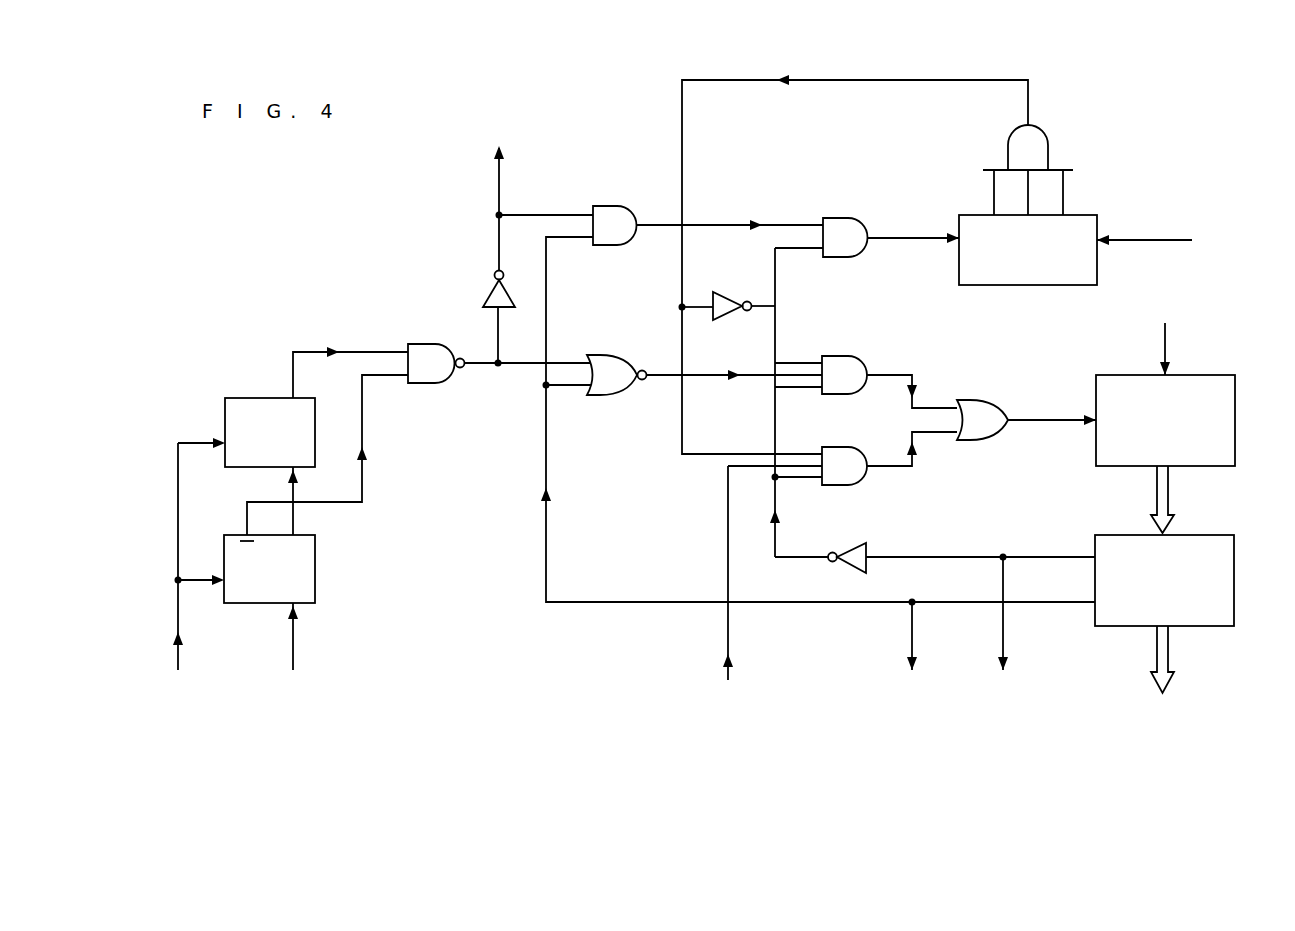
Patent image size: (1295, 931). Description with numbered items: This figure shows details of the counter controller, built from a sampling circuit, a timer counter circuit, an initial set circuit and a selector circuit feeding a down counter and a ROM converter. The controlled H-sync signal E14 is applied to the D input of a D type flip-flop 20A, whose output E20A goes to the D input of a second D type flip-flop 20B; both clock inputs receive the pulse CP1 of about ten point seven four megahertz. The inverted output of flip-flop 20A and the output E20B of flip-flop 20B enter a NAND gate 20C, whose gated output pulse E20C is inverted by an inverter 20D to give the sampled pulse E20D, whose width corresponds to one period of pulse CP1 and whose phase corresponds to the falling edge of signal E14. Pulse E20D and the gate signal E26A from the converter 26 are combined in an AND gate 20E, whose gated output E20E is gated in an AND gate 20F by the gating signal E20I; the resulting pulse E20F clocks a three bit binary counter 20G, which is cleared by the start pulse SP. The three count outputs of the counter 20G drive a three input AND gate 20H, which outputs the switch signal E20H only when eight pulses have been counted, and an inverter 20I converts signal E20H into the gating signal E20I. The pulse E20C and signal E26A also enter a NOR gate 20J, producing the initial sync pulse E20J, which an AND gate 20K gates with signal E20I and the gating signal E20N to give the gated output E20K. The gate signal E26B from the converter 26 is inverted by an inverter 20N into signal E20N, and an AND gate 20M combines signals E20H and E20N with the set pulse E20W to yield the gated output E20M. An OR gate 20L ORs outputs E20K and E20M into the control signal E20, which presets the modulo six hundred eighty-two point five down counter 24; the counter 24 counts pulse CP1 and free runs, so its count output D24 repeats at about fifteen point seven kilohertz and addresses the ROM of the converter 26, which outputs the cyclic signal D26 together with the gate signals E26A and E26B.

The D type flip-flop 20A is at (315, 578).
The D type flip-flop 20B is at (245, 398).
The NAND gate 20C is at (432, 383).
The inverter 20D is at (482, 296).
The AND gate 20E is at (614, 206).
The AND gate 20F is at (855, 218).
The 3-bit binary counter 20G is at (1010, 285).
The 3-input AND gate 20H is at (1048, 140).
The inverter 20I is at (735, 292).
The NOR gate 20J is at (630, 395).
The AND gate 20K is at (850, 356).
The OR gate 20L is at (990, 400).
The AND gate 20M is at (850, 447).
The inverter 20N is at (846, 544).
The counter 24 is at (1235, 428).
The converter 26 is at (1234, 607).
The output of FF 20A E20A is at (293, 517).
The output of FF 20B E20B is at (332, 352).
The gated output pulse E20C is at (490, 366).
The sampled pulse E20D is at (534, 192).
The gated output E20E is at (735, 225).
The gated output pulse E20F is at (900, 250).
The switch signal E20H is at (790, 80).
The gating signal E20I is at (775, 306).
The initial sync pulse E20J is at (723, 378).
The gated output E20K is at (915, 380).
The gated output E20M is at (915, 462).
The gating signal E20N is at (772, 530).
The set pulse E20W is at (758, 599).
The control signal E20 is at (1040, 420).
The gate signal E26A is at (548, 505).
The gate signal E26B is at (980, 631).
The controlled H-sync signal E14 is at (293, 650).
The pulse CP1 is at (189, 570).
The start pulse SP is at (1159, 230).
The count output D24 is at (1168, 510).
The cyclic signal D26 is at (1168, 670).